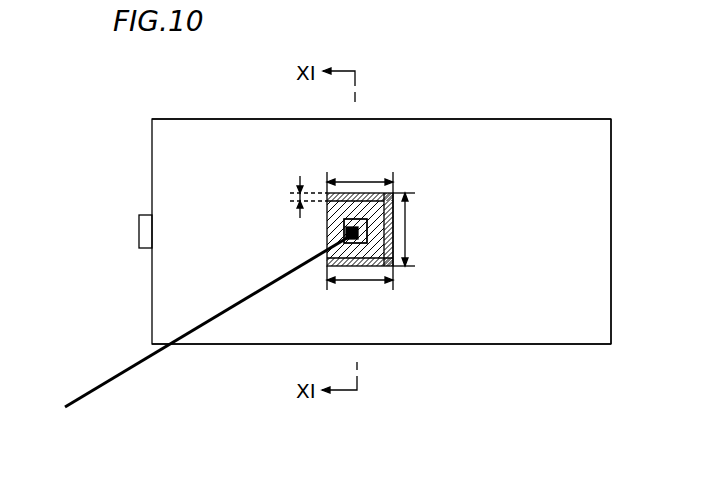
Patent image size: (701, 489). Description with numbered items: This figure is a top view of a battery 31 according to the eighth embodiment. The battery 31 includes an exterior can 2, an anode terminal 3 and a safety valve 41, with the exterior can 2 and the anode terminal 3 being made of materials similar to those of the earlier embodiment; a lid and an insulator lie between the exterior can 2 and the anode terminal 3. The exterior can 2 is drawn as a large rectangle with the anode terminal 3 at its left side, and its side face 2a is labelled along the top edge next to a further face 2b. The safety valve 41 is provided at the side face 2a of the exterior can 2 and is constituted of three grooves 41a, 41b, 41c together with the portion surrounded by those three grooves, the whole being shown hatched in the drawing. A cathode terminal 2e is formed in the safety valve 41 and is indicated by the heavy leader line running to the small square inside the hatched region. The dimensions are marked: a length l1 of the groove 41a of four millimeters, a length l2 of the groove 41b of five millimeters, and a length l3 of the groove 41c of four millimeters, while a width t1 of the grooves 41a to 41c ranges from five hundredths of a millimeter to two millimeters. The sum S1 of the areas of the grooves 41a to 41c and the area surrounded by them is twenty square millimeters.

The exterior can 2 is at (628, 67).
The side face 2a is at (562, 143).
The substrate side surface 2b is at (612, 140).
The cathode terminal 2e is at (192, 339).
The anode terminal 3 is at (141, 218).
The battery 31 is at (432, 85).
The safety valve 41 is at (407, 181).
The groove 41a is at (326, 194).
The groove 41b is at (393, 266).
The groove 41c is at (392, 268).
The sum of areas S1 is at (345, 236).
The width of grooves t1 is at (297, 197).
The length of groove l1 is at (360, 224).
The length of groove l2 is at (409, 229).
The length of groove l3 is at (360, 286).